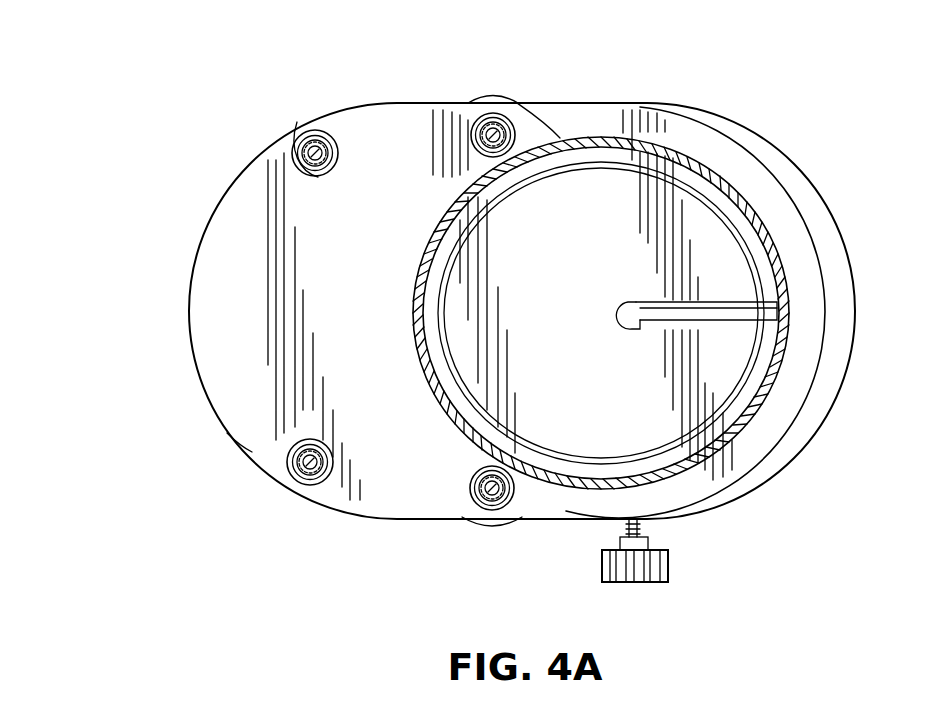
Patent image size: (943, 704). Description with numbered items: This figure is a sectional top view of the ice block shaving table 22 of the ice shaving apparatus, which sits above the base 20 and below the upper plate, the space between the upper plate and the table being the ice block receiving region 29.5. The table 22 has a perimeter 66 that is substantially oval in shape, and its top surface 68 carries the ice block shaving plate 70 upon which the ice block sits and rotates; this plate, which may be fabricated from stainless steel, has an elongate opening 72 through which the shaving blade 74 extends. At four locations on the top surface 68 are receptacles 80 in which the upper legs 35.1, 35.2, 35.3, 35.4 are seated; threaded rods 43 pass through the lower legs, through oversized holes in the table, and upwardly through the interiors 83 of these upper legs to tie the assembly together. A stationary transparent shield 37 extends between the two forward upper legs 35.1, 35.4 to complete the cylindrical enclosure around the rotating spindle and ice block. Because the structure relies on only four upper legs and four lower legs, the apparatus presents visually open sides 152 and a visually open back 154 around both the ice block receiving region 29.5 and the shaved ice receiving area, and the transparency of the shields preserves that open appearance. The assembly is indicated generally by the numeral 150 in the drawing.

The base 20 is at (838, 326).
The ice block shaving table 22 is at (337, 103).
The ice block receiving region 29.5 is at (640, 393).
The upper leg 35.1 is at (488, 117).
The upper leg 35.2 is at (337, 142).
The upper leg 35.3 is at (290, 473).
The upper leg 35.4 is at (500, 500).
The stationary shield 37 is at (430, 380).
The threaded rod 43 is at (305, 175).
The perimeter 66 is at (777, 440).
The top surface 68 is at (210, 313).
The ice block shaving plate 70 is at (707, 210).
The elongate opening 72 is at (752, 290).
The shaving blade 74 is at (770, 335).
The receptacle 80 is at (297, 127).
The interior 83 is at (293, 157).
The assembly 150 is at (832, 219).
The side 152 is at (421, 100).
The back 154 is at (181, 294).